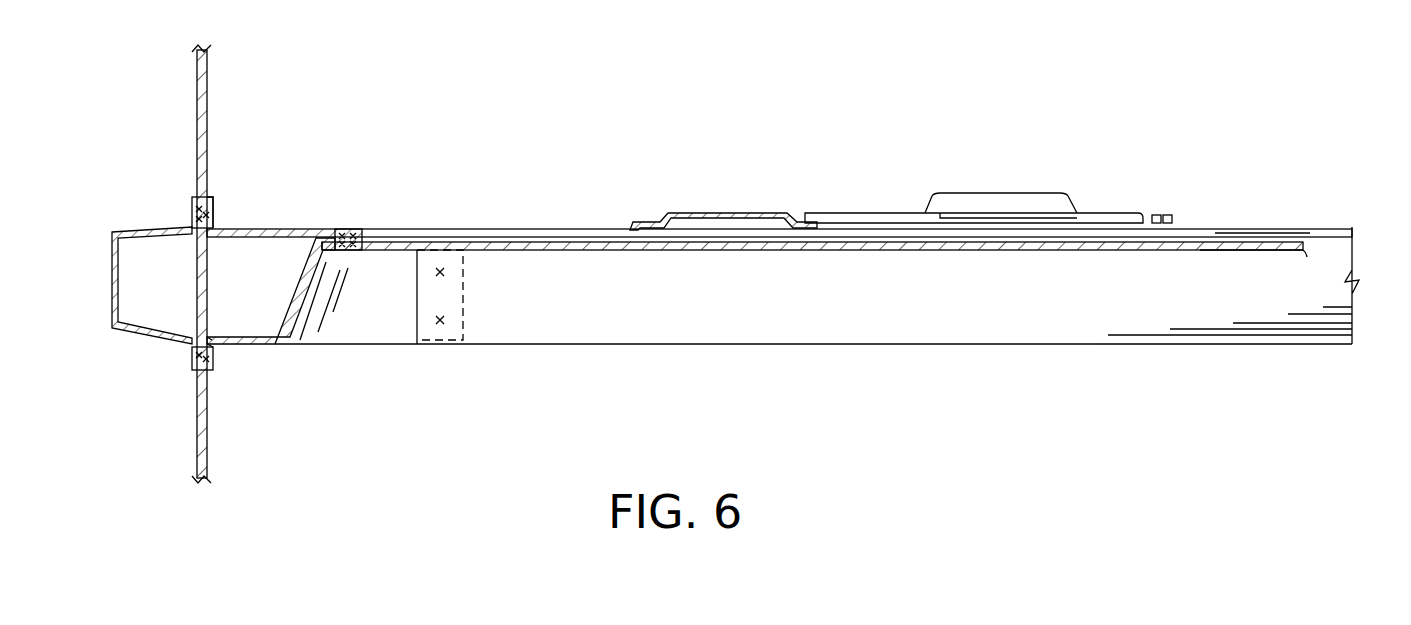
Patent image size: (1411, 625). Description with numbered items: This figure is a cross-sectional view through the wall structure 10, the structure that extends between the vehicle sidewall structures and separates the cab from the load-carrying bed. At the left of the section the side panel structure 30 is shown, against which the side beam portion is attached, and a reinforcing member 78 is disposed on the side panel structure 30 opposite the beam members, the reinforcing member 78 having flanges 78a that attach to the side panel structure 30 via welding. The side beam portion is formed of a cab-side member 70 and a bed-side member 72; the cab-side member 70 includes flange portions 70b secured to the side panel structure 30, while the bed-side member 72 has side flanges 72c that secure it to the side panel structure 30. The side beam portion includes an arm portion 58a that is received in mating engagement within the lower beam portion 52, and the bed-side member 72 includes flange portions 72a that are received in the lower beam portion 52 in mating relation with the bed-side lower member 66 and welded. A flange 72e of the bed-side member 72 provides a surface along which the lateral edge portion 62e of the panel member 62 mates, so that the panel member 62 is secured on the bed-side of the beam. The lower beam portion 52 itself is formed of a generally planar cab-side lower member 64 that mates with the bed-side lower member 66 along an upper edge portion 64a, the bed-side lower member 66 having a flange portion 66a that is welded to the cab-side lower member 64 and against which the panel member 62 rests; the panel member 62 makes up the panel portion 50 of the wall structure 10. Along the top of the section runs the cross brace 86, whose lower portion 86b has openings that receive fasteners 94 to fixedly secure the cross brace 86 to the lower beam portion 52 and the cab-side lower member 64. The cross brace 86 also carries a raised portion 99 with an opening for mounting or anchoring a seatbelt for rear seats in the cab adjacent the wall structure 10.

The wall structure 10 is at (981, 374).
The side panel structure 30 is at (208, 440).
The panel portion 50 is at (1242, 253).
The lower beam portion 52 is at (1060, 346).
The arm portion 58a is at (405, 300).
The panel member 62 is at (690, 251).
The lateral edge portion 62e is at (332, 251).
The cab-side lower member 64 is at (1330, 231).
The upper edge portion 64a is at (1278, 231).
The bed-side lower member 66 is at (853, 346).
The flange portion 66a is at (1237, 231).
The cab-side member 70 is at (272, 229).
The flange portions 70b is at (214, 207).
The bed-side member 72 is at (262, 346).
The flange portions 72a is at (456, 300).
The side flanges 72c is at (213, 367).
The flange 72e is at (353, 251).
The reinforcing member 78 is at (112, 290).
The flanges 78a is at (193, 212).
The cross brace 86 is at (838, 212).
The lower portion 86b is at (1112, 211).
The fasteners 94 is at (1157, 214).
The raised portion 99 is at (970, 200).